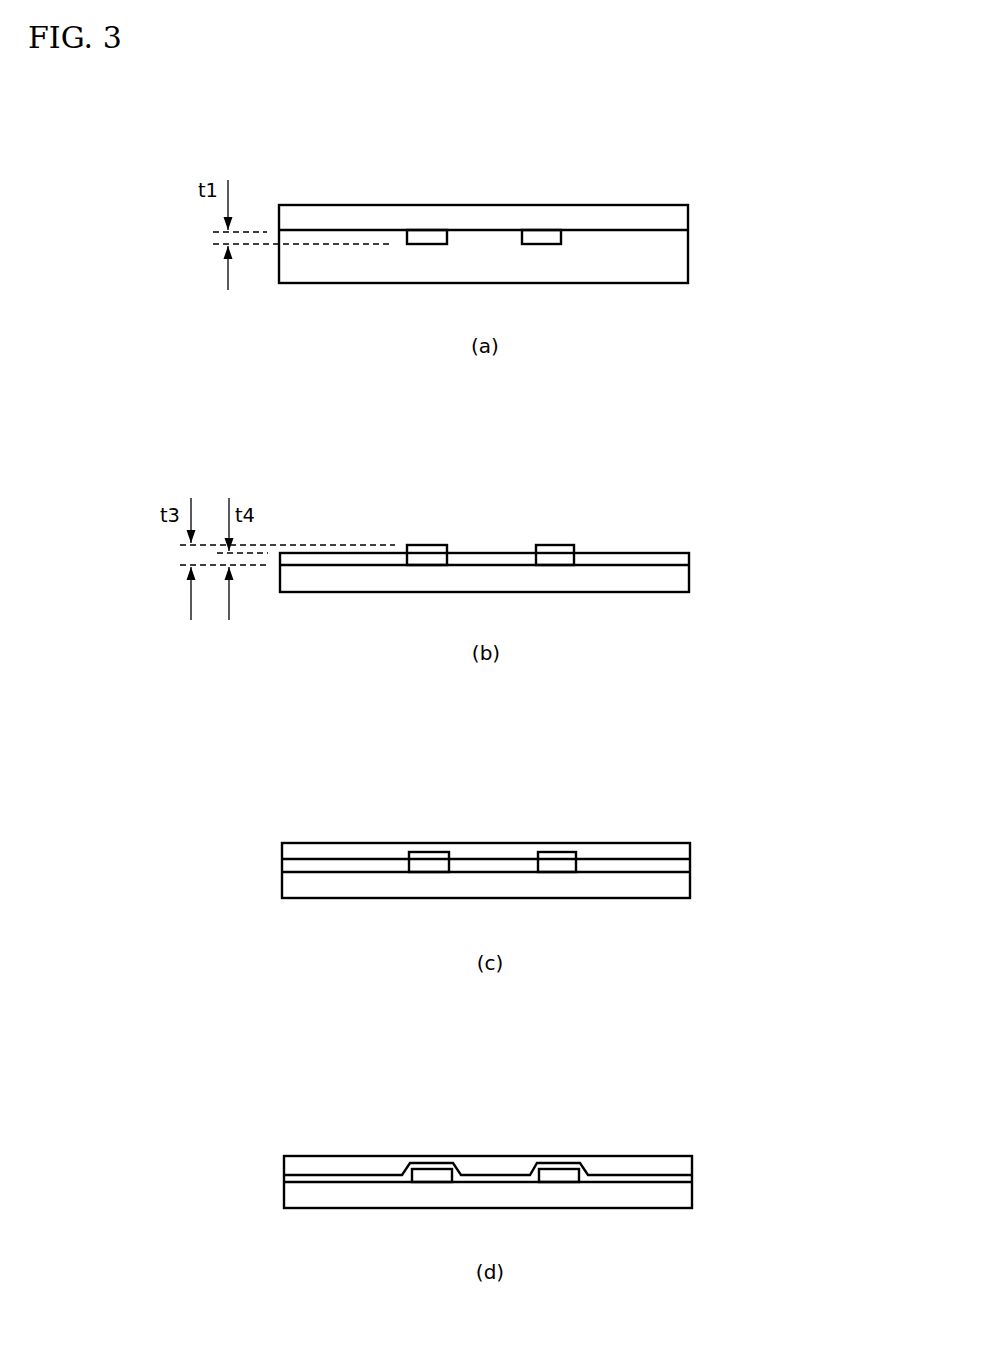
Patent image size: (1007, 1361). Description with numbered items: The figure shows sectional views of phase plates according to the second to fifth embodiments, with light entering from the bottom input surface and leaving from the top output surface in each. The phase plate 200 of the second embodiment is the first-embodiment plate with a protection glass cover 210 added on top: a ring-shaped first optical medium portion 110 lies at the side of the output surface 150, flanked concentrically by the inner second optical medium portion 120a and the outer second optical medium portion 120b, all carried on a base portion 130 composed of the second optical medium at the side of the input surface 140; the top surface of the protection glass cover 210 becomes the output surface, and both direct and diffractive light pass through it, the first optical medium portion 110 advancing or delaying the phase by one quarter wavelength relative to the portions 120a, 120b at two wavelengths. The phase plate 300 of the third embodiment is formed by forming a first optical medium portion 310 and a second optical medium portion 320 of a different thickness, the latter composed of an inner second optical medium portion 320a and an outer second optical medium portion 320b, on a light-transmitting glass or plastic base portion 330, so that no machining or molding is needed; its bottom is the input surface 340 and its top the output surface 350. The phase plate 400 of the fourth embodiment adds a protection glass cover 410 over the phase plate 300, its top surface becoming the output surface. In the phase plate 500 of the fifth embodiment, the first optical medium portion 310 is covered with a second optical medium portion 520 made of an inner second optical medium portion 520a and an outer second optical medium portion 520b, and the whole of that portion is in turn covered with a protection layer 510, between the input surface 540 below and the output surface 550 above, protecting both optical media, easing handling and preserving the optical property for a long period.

The first optical medium portion 110 is at (425, 238).
The inner second optical medium portion 120a is at (320, 240).
The outer second optical medium portion 120b is at (482, 240).
The base portion 130 is at (616, 268).
The input surface 140 is at (329, 286).
The output surface 150 is at (298, 200).
The phase plate 200 is at (458, 182).
The protection glass cover 210 is at (675, 217).
The phase plate 300 is at (448, 502).
The first optical medium portion 310 is at (430, 557).
The second optical medium portion 320 is at (484, 500).
The inner second optical medium portion 320a is at (320, 560).
The outer second optical medium portion 320b is at (487, 557).
The base portion 330 is at (603, 575).
The input surface 340 is at (339, 596).
The output surface 350 is at (306, 545).
The phase plate 400 is at (454, 810).
The protection glass cover 410 is at (677, 850).
The phase plate 500 is at (450, 1117).
The protection layer 510 is at (680, 1162).
The second optical medium portion 520 is at (488, 1113).
The inner second optical medium portion 520a is at (318, 1178).
The outer second optical medium portion 520b is at (488, 1175).
The input surface 540 is at (331, 1211).
The output surface 550 is at (305, 1150).